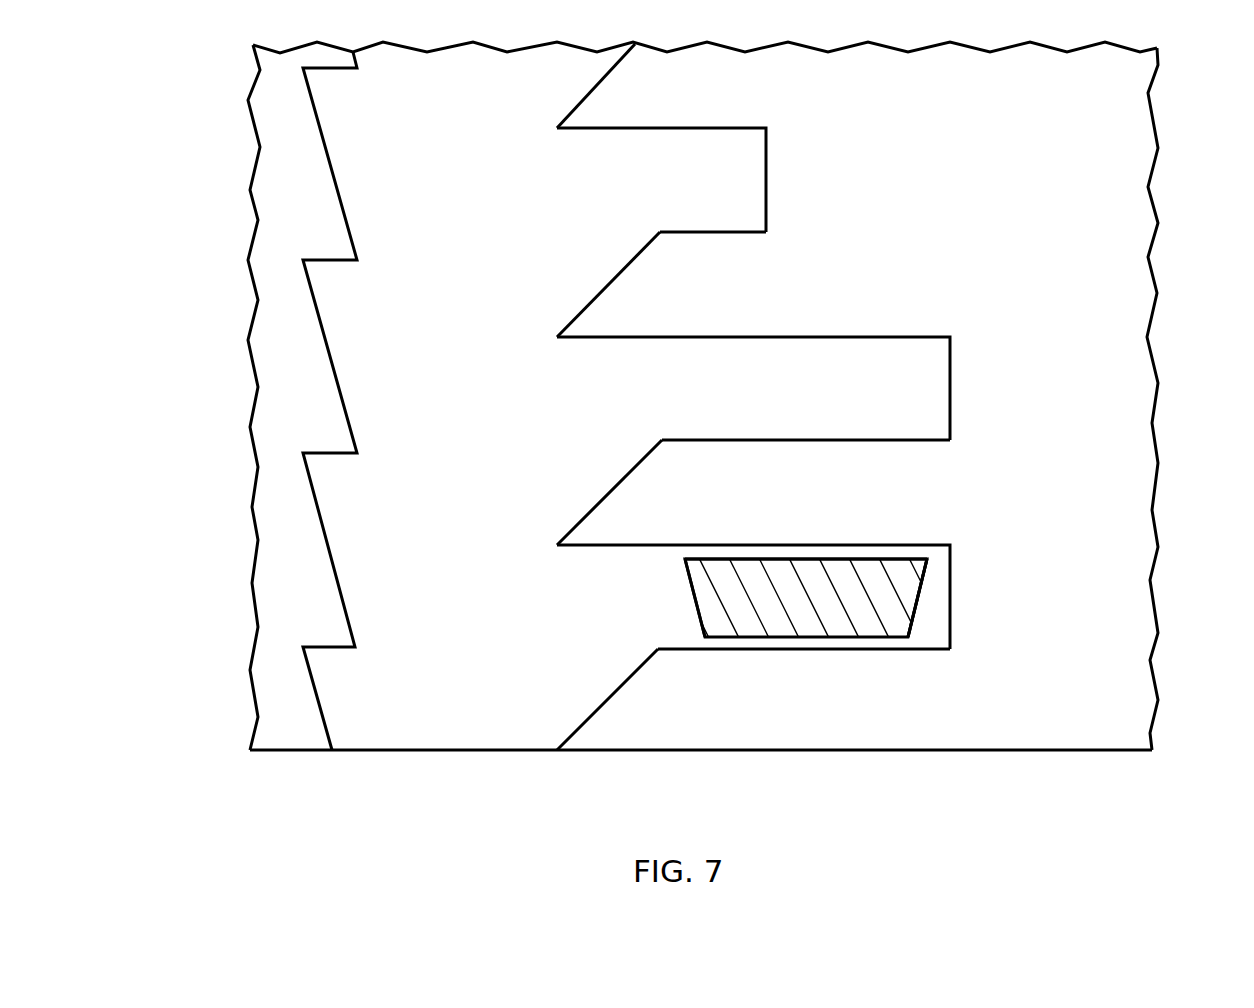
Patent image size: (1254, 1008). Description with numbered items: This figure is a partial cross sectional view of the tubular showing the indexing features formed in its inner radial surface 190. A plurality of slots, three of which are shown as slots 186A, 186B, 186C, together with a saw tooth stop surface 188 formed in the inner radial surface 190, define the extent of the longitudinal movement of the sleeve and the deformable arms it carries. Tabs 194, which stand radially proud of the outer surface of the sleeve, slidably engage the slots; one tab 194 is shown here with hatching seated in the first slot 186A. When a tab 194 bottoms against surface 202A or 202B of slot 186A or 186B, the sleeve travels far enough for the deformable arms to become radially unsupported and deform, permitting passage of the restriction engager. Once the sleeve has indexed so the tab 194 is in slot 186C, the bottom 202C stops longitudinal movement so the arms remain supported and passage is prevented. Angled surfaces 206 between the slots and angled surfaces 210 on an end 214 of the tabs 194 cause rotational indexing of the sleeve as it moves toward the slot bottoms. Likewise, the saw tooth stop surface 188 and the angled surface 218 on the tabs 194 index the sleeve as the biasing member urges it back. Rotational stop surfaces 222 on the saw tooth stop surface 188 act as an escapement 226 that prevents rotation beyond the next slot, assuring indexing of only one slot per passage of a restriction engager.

The saw tooth stop surface 188 is at (343, 592).
The inner radial surface 190 is at (1130, 341).
The rotational stop surfaces 222 is at (330, 457).
The angled surfaces 206 is at (600, 287).
The surface 202A is at (952, 597).
The surface 202B is at (948, 392).
The bottom 202C is at (766, 202).
The slot 186A is at (790, 650).
The slot 186B is at (787, 443).
The slot 186C is at (715, 233).
The tabs 194 is at (880, 570).
The angled surfaces 210 is at (925, 577).
The end 214 is at (742, 562).
The angled surface 218 is at (692, 603).
The escapement 226 is at (175, 314).